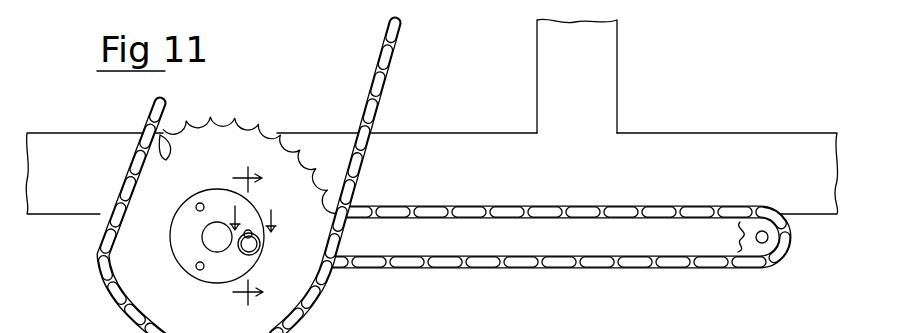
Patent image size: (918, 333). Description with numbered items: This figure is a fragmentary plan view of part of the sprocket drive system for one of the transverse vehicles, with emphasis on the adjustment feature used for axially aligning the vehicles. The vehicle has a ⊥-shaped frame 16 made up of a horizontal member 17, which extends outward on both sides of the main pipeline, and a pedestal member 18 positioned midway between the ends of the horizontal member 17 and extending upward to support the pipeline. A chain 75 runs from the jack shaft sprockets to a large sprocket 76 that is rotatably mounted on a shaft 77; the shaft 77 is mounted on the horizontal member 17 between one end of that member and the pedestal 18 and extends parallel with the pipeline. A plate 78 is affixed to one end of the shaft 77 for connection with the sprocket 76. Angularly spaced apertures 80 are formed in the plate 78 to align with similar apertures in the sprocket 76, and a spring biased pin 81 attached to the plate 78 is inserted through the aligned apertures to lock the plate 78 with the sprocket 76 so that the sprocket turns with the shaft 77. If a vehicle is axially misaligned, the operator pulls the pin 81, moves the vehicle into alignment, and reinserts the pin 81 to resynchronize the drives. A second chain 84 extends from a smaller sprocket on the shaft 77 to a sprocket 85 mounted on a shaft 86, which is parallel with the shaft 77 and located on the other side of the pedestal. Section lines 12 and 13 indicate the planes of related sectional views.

The section line 12- 12 is at (263, 236).
The section line 13- 13 is at (254, 214).
The frame 16 is at (73, 125).
The horizontal member 17 is at (726, 133).
The pedestal member 18 is at (611, 45).
The chain 75 is at (384, 76).
The large sprocket 76 is at (213, 128).
The shaft 77 is at (221, 244).
The plate 78 is at (179, 243).
The apertures 80 is at (197, 204).
The spring biased pin 81 is at (260, 243).
The chain 84 is at (388, 262).
The sprocket 85 is at (740, 238).
The shaft 86 is at (768, 238).